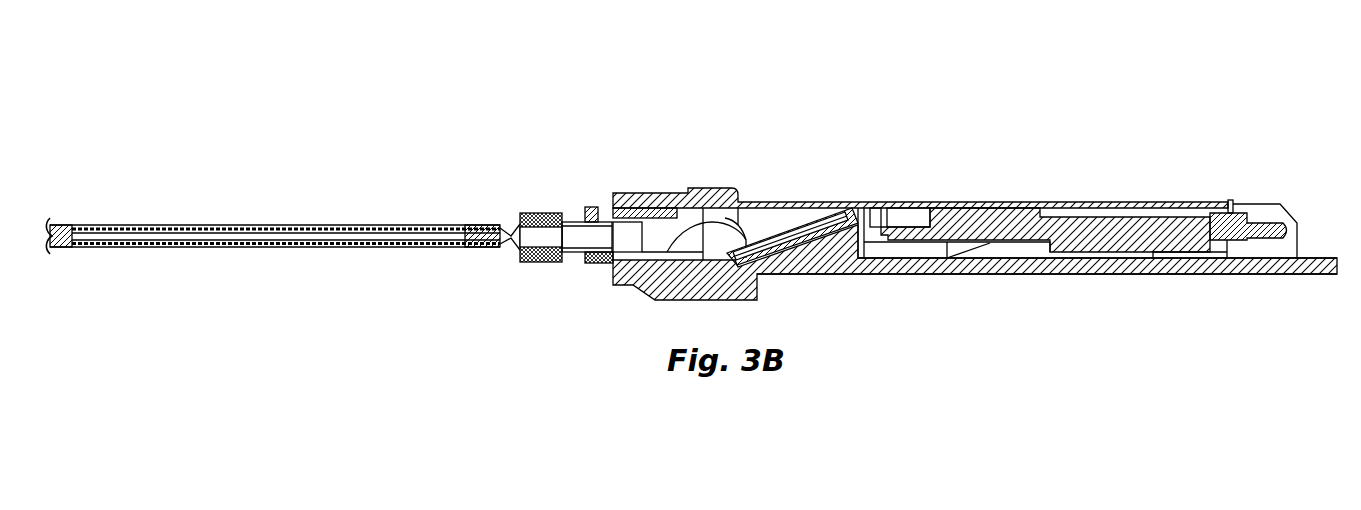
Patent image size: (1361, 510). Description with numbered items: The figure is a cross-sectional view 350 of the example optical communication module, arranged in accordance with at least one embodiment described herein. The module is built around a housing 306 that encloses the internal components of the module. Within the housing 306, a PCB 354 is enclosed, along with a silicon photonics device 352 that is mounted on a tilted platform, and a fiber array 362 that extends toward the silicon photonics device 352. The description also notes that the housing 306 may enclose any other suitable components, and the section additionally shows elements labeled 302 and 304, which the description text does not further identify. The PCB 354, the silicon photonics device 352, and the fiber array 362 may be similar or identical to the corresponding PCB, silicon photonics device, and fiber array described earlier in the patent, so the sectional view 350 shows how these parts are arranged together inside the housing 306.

The cross-sectional view 350 is at (289, 98).
The housing 302 is at (640, 205).
The shaft 304 is at (627, 241).
The housing 306 is at (1020, 273).
The silicon photonics device 352 is at (800, 227).
The PCB 354 is at (1017, 215).
The fiber array 362 is at (740, 243).